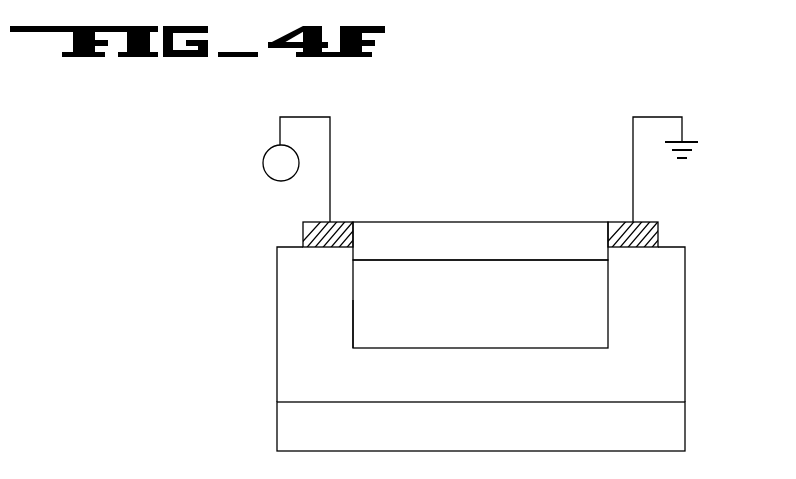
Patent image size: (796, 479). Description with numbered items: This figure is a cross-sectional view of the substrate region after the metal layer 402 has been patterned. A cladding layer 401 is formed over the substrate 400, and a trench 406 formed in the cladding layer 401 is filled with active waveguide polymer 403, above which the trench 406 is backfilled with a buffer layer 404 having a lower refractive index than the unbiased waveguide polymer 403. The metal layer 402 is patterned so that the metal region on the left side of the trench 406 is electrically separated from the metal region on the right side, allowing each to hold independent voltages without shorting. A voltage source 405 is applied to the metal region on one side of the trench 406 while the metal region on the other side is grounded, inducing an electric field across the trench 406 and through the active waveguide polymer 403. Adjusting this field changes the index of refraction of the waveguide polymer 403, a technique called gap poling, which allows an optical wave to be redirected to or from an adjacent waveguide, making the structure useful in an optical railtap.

The substrate 400 is at (670, 431).
The cladding layer 401 is at (667, 327).
The metal layer 402 is at (303, 232).
The active waveguide polymer 403 is at (494, 308).
The buffer layer 404 is at (522, 233).
The voltage source 405 is at (265, 151).
The trench 406 is at (343, 325).